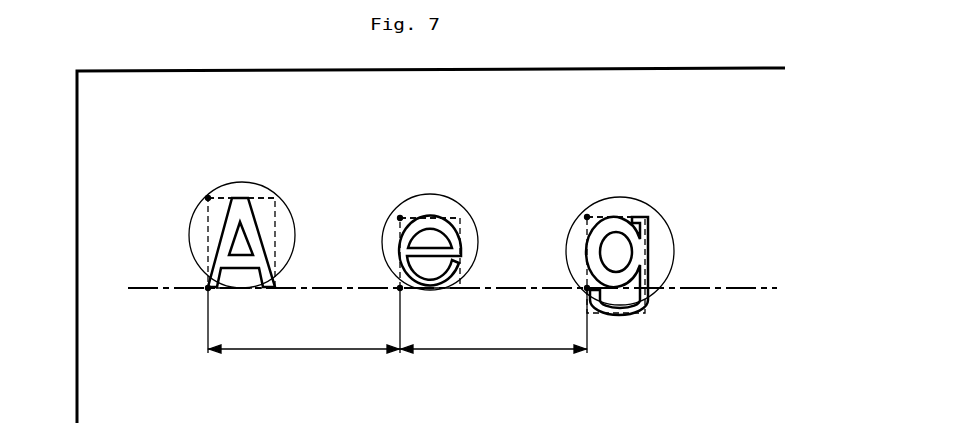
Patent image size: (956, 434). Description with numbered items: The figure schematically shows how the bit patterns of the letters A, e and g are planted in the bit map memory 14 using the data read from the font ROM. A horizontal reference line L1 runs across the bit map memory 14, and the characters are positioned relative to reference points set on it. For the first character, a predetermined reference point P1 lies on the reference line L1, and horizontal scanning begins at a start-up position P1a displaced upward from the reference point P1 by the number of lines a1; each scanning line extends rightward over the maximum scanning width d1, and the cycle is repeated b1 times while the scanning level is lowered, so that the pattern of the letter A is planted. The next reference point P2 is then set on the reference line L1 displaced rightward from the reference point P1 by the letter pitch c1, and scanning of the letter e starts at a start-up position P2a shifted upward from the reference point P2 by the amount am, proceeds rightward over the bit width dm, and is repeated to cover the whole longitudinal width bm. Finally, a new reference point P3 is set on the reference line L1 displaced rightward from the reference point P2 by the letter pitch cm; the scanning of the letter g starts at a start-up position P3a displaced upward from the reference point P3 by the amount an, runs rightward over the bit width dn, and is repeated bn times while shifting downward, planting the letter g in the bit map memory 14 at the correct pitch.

The bit map memory 14 is at (215, 95).
The reference line L1 is at (718, 284).
The reference point P1 is at (212, 289).
The start-up position P1a is at (208, 198).
The reference point P2 is at (402, 290).
The start-up position P2a is at (400, 218).
The reference point P3 is at (590, 314).
The start-up position P3a is at (587, 216).
The number of lines data a1 is at (236, 235).
The number of scanning cycles data b1 is at (256, 243).
The maximum scanning width data d1 is at (241, 186).
The upward shift data am is at (417, 242).
The longitudinal width data bm is at (448, 253).
The maximum scanning width data dm is at (430, 201).
The upward shift data an is at (613, 251).
The number of scanning cycles data bn is at (633, 265).
The maximum scanning width data dn is at (616, 200).
The letter pitch c1 is at (291, 350).
The letter pitch cm is at (488, 350).